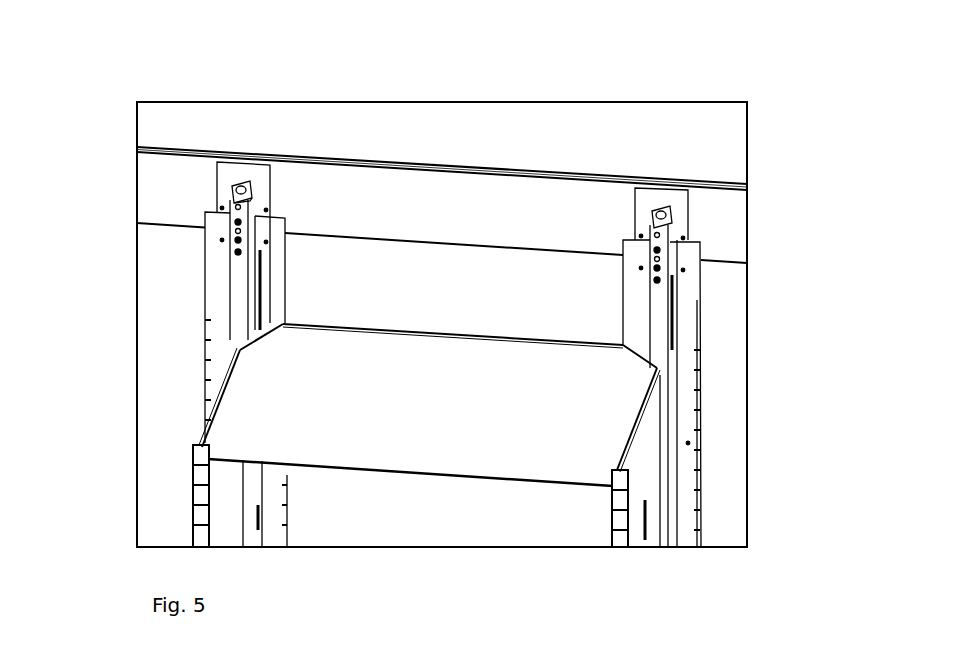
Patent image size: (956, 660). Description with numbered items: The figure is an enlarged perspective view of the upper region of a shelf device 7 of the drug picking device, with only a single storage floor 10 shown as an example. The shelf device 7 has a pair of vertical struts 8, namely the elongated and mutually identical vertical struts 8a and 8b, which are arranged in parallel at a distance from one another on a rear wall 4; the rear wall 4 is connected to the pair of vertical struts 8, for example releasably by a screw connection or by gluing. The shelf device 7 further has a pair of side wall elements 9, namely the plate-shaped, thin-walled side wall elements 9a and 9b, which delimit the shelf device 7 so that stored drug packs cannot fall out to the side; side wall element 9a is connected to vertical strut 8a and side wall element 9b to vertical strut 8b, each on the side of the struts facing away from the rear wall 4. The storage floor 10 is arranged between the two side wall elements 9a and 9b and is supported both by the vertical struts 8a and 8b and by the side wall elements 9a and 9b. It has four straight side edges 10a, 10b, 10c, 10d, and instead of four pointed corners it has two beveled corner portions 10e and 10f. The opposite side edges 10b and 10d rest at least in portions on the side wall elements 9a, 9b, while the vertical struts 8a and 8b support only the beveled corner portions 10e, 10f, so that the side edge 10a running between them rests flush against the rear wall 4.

The rear wall 4 is at (155, 242).
The shelf device 7 is at (707, 157).
The pair of vertical struts 8 is at (453, 278).
The vertical strut 8a is at (242, 187).
The vertical strut 8b is at (657, 208).
The pair of side wall elements 9 is at (426, 508).
The side wall element 9a is at (233, 533).
The side wall element 9b is at (642, 538).
The storage floor 10 is at (429, 342).
The side edge 10a is at (442, 335).
The side edge 10b is at (630, 437).
The side edge 10c is at (363, 467).
The side edge 10d is at (223, 405).
The corner portion 10e is at (265, 335).
The corner portion 10f is at (650, 372).